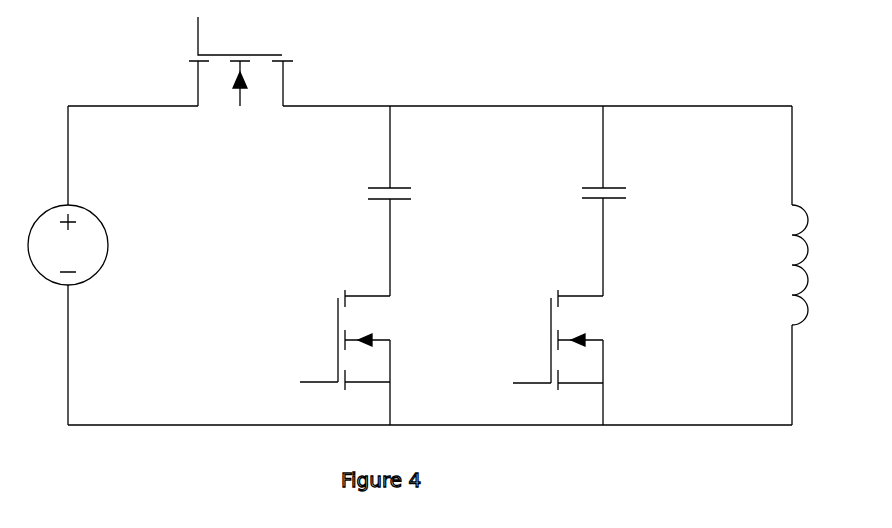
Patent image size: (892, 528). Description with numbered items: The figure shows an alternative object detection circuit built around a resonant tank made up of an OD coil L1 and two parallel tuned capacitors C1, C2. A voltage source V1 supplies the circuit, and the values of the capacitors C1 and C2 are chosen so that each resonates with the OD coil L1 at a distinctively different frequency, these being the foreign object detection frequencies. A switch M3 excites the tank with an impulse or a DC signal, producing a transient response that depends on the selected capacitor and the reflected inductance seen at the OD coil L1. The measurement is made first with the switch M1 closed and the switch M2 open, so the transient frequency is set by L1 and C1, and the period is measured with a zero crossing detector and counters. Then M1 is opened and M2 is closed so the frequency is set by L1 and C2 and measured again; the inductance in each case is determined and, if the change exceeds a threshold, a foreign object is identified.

The DC voltage source V1 is at (81, 247).
The switch M3 is at (241, 92).
The tuned capacitor C2 is at (398, 201).
The switch M2 is at (376, 357).
The tuned capacitor C1 is at (610, 201).
The switch M1 is at (591, 357).
The OD coil L1 is at (819, 265).